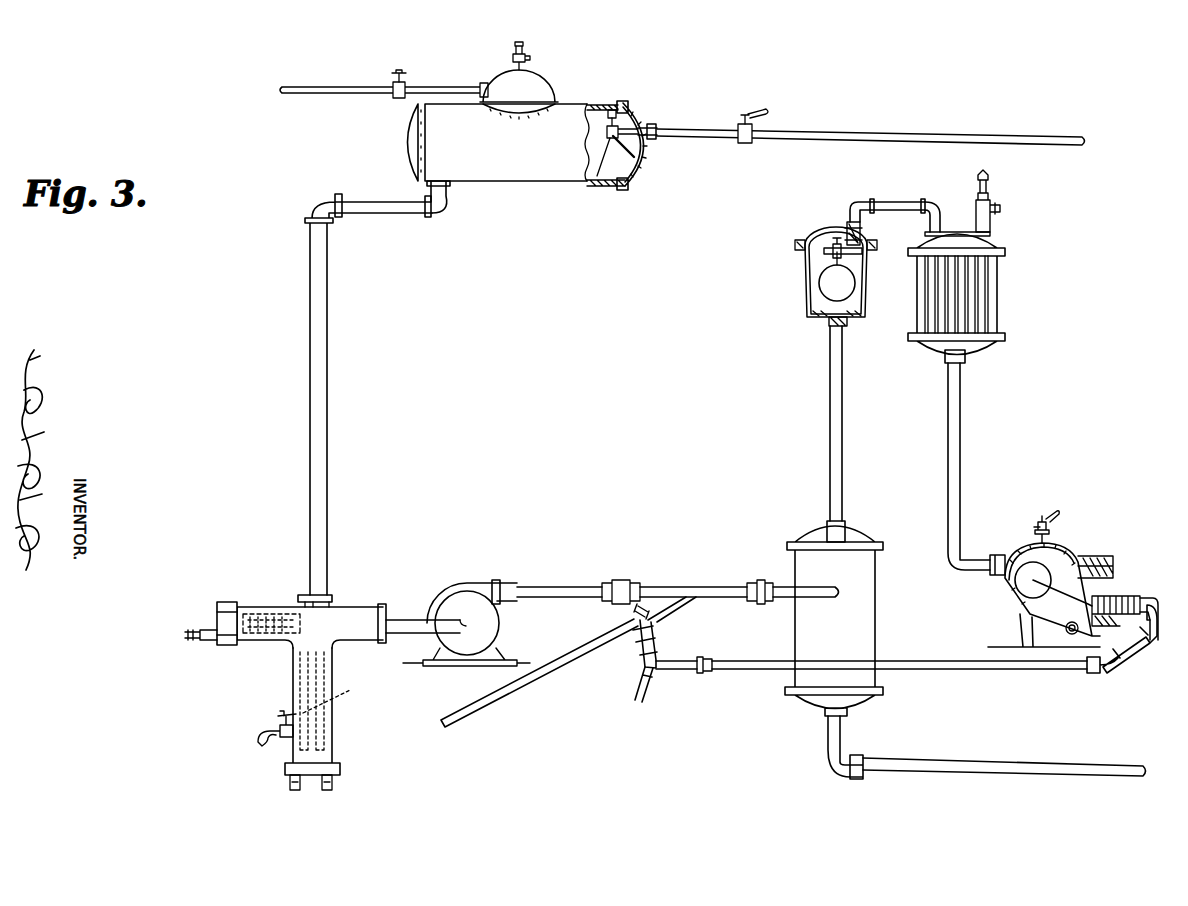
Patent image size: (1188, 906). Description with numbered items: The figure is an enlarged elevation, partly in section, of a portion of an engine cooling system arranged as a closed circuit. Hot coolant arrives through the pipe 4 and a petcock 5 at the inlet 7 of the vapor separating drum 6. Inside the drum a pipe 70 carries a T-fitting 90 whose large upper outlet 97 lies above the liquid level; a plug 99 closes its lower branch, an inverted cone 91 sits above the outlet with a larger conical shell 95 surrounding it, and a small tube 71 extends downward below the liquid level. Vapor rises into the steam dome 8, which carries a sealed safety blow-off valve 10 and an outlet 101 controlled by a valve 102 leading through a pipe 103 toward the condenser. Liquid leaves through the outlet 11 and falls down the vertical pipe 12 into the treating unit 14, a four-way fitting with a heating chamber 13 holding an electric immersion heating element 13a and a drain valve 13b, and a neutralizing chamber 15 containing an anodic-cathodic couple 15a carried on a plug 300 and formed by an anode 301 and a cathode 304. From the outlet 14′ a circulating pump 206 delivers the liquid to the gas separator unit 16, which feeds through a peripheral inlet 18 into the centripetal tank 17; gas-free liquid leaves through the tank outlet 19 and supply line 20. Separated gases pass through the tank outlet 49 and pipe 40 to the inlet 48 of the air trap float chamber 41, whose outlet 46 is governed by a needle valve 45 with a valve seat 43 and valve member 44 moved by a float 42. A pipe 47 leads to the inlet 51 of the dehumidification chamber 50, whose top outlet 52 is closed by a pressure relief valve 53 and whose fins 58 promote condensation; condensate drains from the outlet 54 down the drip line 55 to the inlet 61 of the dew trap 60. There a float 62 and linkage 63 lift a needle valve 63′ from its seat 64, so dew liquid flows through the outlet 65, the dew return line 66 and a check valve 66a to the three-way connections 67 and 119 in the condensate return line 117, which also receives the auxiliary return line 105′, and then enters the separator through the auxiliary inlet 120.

The pipe 4 is at (852, 132).
The petcock 5 is at (737, 128).
The vapor separating drum 6 is at (530, 183).
The inlet 7 is at (655, 127).
The steam dome 8 is at (548, 88).
The safety blow-off valve 10 is at (537, 52).
The outlet 11 is at (448, 193).
The pipe 12 is at (363, 196).
The heating chamber 13 is at (243, 695).
The electric immersion heating element 13a is at (339, 701).
The outlet valve 13b is at (256, 736).
The treating unit 14 is at (337, 645).
The outlet 14′ is at (387, 615).
The neutralizing chamber 15 is at (240, 605).
The anodic-cathodic couple 15a is at (222, 648).
The gas separator unit 16 is at (700, 586).
The centripetal tank 17 is at (877, 605).
The peripheral inlet 18 is at (838, 597).
The tank outlet 19 is at (826, 723).
The supply line 20 is at (1006, 765).
The pipe 40 is at (828, 403).
The air trap float chamber 41 is at (804, 319).
The float 42 is at (822, 279).
The valve seat 43 is at (846, 229).
The valve member 44 is at (862, 257).
The needle valve 45 is at (863, 235).
The outlet 46 is at (857, 204).
The pipe 47 is at (893, 201).
The inlet 48 is at (846, 327).
The tank outlet 49 is at (846, 523).
The dehumidification chamber 50 is at (918, 304).
The inlet 51 is at (944, 214).
The outlet 52 is at (992, 235).
The pressure relief valve 53 is at (1000, 209).
The condensate outlet 54 is at (945, 367).
The drip line 55 is at (948, 453).
The ribs or fins 58 is at (996, 295).
The dew trap 60 is at (1058, 557).
The inlet 61 is at (990, 574).
The float 62 is at (1028, 589).
The linkage 63 is at (1060, 622).
The needle valve 63′ is at (1114, 566).
The valve 64 is at (1128, 596).
The outlet 65 is at (1140, 622).
The dew return line 66 is at (752, 672).
The check valve 66a is at (703, 673).
The three-way connection 67 is at (660, 655).
The pipe 70 is at (640, 142).
The tube 71 is at (640, 172).
The T-fitting 90 is at (608, 134).
The inverted cone 91 is at (605, 131).
The conical shell 95 is at (604, 104).
The outlet 97 is at (617, 113).
The plug 99 is at (597, 178).
The outlet 101 is at (484, 83).
The valve 102 is at (404, 85).
The pipe 103 is at (322, 86).
The return line 105′ is at (639, 705).
The line 117 is at (568, 664).
The three-way connection 119 is at (633, 610).
The auxiliary inlet 120 is at (670, 612).
The circulating pump 206 is at (465, 648).
The plug 300 is at (216, 612).
The anode 301 is at (266, 612).
The cathode 304 is at (272, 630).